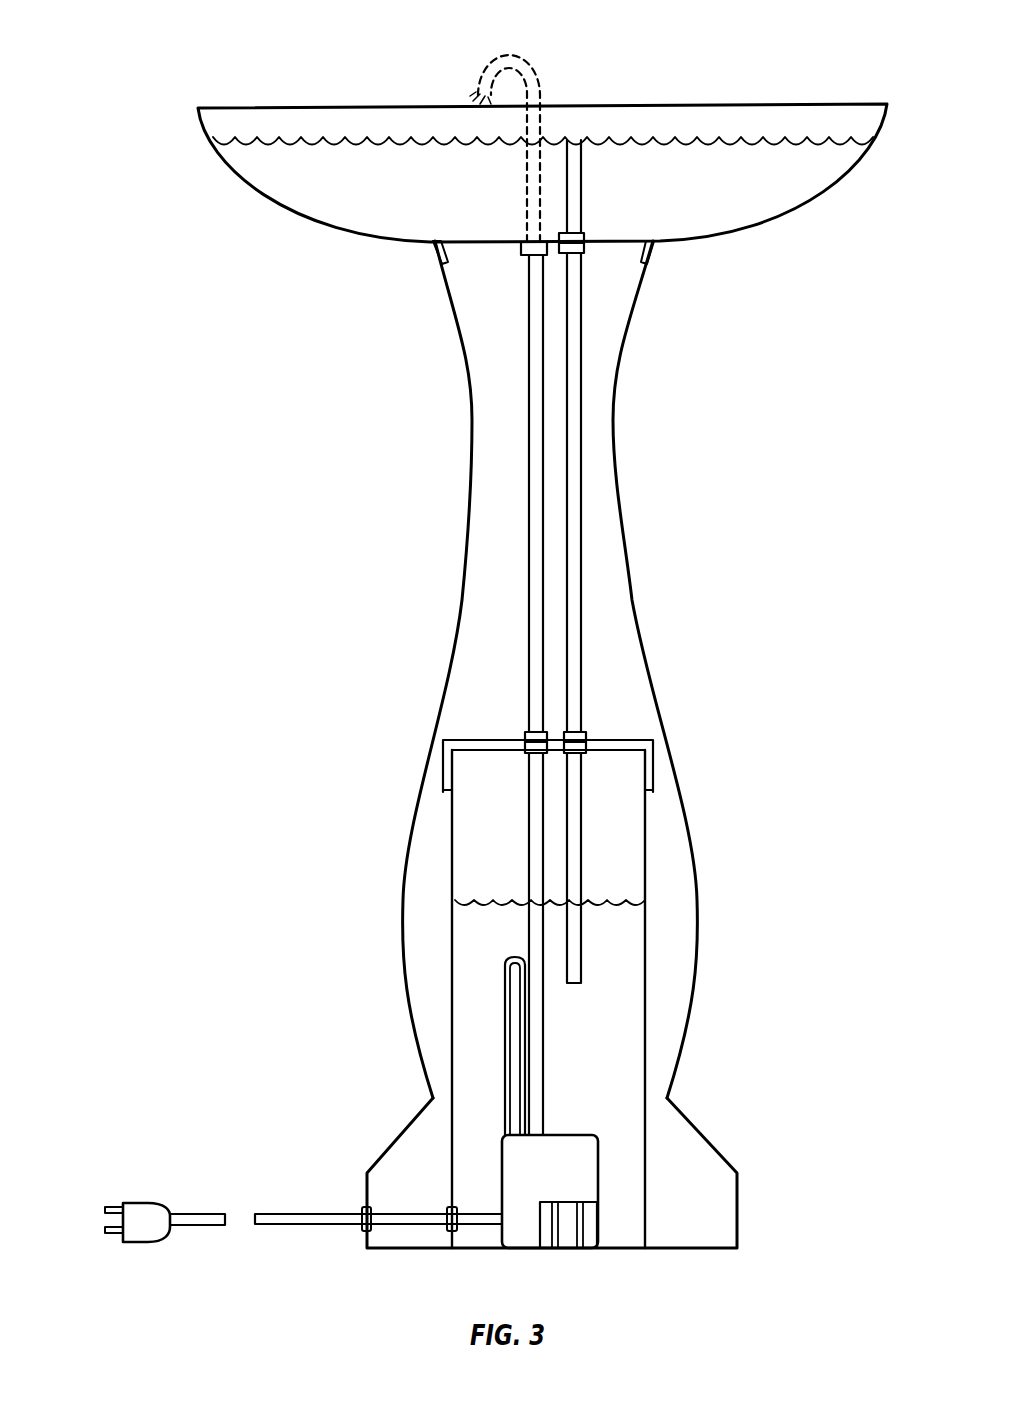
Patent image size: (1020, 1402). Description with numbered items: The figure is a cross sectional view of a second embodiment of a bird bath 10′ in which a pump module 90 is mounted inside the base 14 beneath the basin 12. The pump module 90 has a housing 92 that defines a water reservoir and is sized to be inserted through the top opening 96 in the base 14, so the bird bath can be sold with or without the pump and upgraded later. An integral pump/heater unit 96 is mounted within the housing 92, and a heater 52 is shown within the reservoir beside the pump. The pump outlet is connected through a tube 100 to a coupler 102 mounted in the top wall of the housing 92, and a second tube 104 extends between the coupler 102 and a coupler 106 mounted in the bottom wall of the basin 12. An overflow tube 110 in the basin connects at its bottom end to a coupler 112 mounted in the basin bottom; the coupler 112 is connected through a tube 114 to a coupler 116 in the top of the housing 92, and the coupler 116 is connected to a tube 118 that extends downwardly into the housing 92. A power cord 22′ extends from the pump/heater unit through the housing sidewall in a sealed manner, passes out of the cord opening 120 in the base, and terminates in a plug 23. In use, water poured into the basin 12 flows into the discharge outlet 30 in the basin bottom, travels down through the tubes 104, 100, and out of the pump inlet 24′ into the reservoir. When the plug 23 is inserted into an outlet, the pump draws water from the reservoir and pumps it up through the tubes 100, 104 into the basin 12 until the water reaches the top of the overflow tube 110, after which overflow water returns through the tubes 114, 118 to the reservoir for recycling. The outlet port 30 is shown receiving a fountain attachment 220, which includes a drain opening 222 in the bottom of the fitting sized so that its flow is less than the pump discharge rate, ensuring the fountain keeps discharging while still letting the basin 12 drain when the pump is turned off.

The bird bath 10′ is at (745, 47).
The basin 12 is at (760, 223).
The base 14 is at (637, 618).
The power cord 22′ is at (317, 1210).
The plug 23 is at (140, 1243).
The pump inlet 24′ is at (600, 1249).
The discharge outlet 30 is at (522, 242).
The heater 52 is at (506, 968).
The pump module 90 is at (648, 913).
The housing 92 is at (648, 977).
The pump/heater unit 96 is at (465, 253).
The tube 100 is at (530, 897).
The coupler 102 is at (525, 740).
The second tube 104 is at (527, 517).
The coupler 106 is at (520, 250).
The overflow tube 110 is at (578, 198).
The coupler 112 is at (580, 233).
The tube 114 is at (580, 363).
The coupler 116 is at (586, 740).
The tube 118 is at (585, 865).
The cord opening 120 is at (358, 1224).
The fountain attachment 220 is at (512, 52).
The drain opening 222 is at (520, 235).